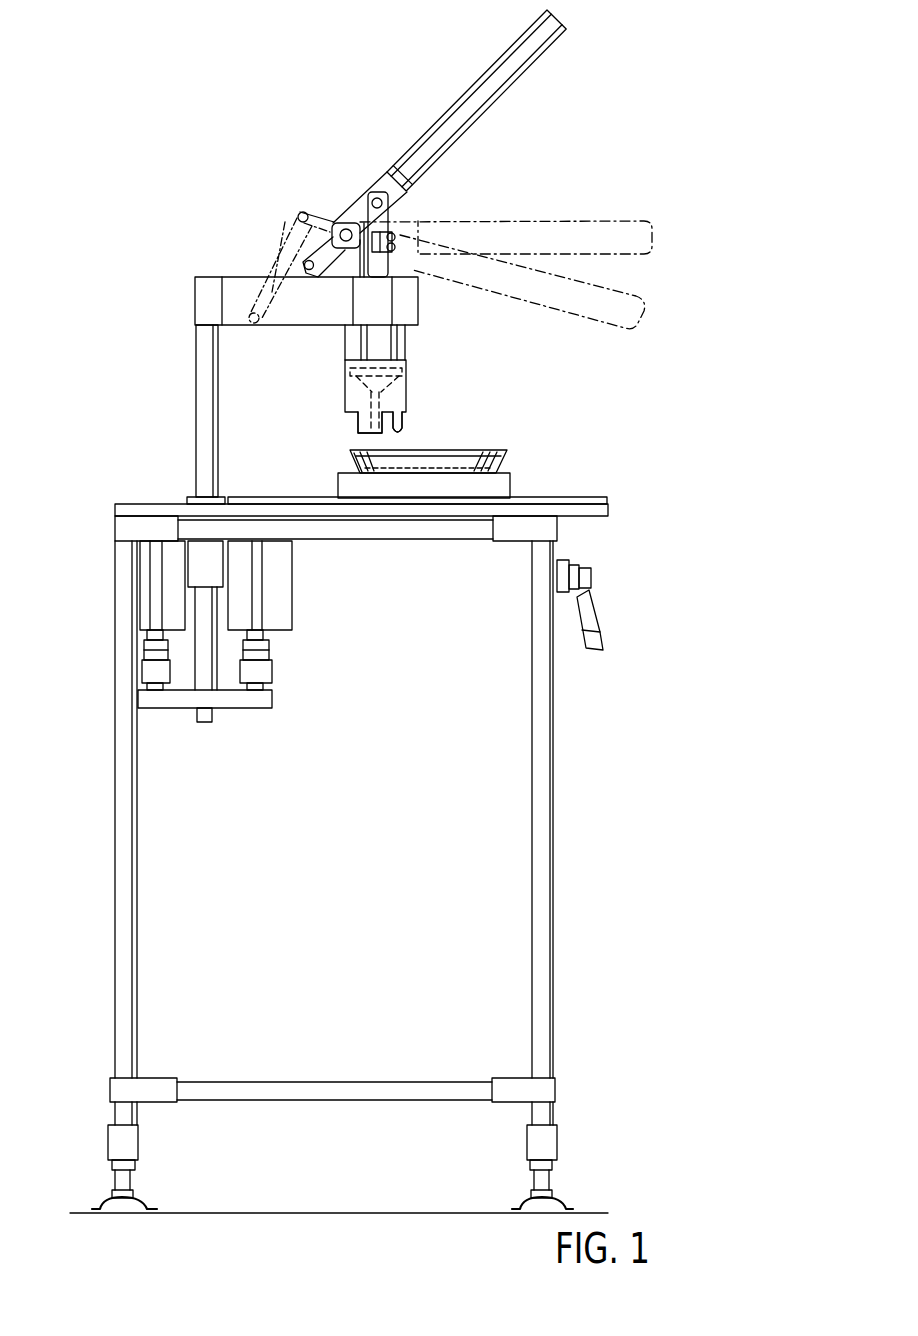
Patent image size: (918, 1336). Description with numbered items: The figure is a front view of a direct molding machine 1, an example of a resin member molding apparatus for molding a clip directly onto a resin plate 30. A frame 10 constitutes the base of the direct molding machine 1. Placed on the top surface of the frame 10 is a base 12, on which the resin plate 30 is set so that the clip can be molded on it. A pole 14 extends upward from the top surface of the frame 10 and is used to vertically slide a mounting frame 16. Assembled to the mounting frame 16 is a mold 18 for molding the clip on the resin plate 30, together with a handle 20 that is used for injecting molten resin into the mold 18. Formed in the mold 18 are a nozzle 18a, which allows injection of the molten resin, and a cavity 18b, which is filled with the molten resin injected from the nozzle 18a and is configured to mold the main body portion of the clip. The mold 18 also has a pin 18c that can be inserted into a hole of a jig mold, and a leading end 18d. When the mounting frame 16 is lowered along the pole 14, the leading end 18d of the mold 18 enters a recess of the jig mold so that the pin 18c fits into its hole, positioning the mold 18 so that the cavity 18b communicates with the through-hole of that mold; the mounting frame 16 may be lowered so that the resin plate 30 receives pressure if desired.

The direct molding machine 1 is at (132, 179).
The frame 10 is at (125, 836).
The base 12 is at (498, 488).
The pole 14 is at (203, 412).
The mounting frame 16 is at (243, 290).
The mold 18 is at (397, 390).
The nozzle 18a is at (347, 370).
The cavity 18b is at (352, 423).
The pin 18c is at (402, 420).
The leading end 18d is at (352, 430).
The handle 20 is at (455, 118).
The resin plate 30 is at (490, 448).